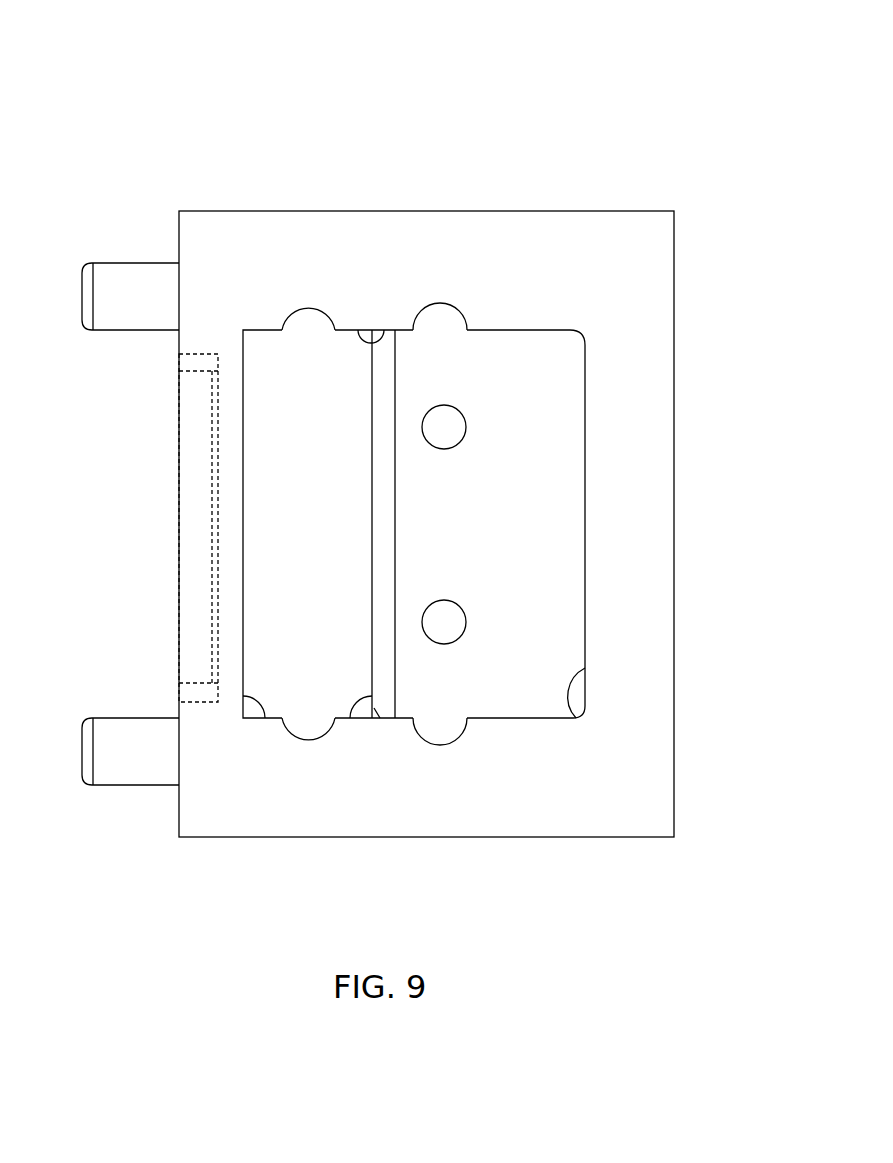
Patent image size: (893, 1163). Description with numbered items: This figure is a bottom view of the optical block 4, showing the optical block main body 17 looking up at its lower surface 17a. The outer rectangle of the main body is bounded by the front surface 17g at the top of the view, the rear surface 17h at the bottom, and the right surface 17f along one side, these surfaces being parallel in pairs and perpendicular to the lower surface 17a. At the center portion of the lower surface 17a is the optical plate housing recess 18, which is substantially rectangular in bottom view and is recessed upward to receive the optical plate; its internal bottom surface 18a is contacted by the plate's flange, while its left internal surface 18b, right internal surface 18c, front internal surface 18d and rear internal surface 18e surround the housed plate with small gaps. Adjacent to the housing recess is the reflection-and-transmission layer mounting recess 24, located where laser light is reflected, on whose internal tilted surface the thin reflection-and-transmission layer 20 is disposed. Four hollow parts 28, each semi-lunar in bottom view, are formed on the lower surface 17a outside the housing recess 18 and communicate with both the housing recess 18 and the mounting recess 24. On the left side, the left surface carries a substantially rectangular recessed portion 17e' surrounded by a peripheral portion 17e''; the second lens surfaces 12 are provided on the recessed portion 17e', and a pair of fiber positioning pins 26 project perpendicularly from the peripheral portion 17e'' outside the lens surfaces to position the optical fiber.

The optical block 4 is at (140, 108).
The optical block main body 17 is at (258, 211).
The front surface 17g is at (443, 211).
The rear surface 17h is at (444, 838).
The right surface 17f is at (674, 496).
The lower surface 17a is at (635, 553).
The fiber positioning pins 26 is at (122, 262).
The portion 17e' is at (155, 528).
The peripheral portion 17e'' is at (115, 834).
The second lens surfaces 12 is at (212, 490).
The reflection-and-transmission layer 20 is at (265, 530).
The optical plate housing recess 18 is at (512, 380).
The reflection-and-transmission layer mounting recess 24 is at (287, 385).
The hollow parts 28 is at (308, 305).
The front internal surface 18d is at (364, 347).
The internal bottom surface 18a is at (492, 670).
The left internal surface 18b is at (265, 718).
The rear internal surface 18e is at (351, 718).
The right internal surface 18c is at (576, 718).